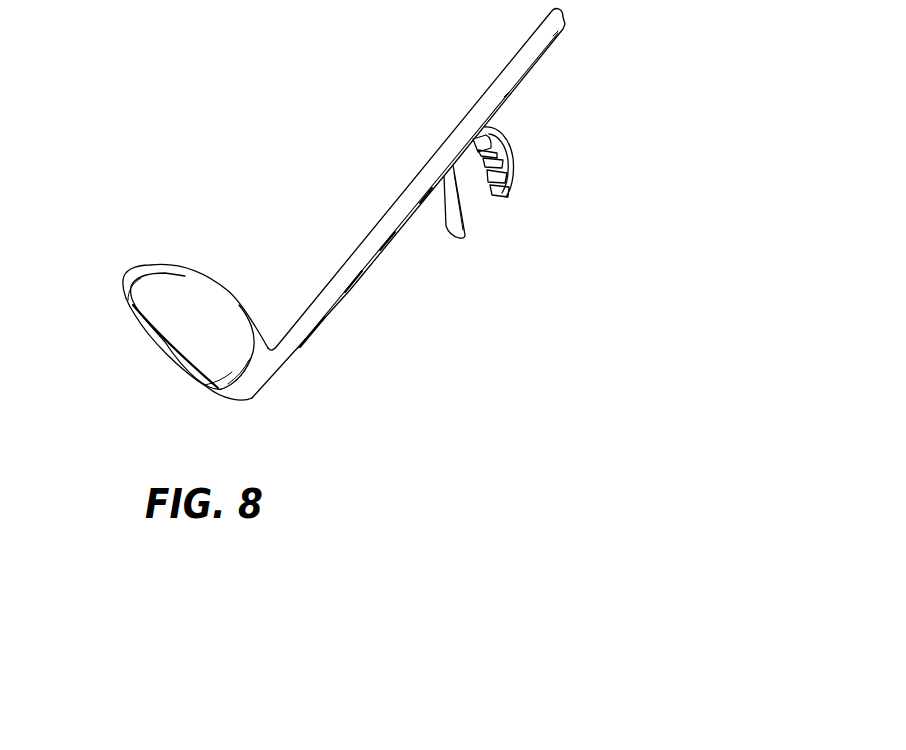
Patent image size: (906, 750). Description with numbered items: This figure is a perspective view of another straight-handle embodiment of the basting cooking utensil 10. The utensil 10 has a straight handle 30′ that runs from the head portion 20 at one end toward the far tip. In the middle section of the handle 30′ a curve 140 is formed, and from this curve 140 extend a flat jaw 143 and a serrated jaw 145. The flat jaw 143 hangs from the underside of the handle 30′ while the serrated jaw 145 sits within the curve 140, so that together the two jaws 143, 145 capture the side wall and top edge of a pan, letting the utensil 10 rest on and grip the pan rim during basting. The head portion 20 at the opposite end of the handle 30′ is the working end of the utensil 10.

The basting cooking utensil 10 is at (280, 142).
The lens frame / eye wire 20 is at (130, 273).
The handle 30′ is at (378, 233).
The curve 140 is at (553, 164).
The serrated jaw 145 is at (516, 188).
The flat jaw 143 is at (460, 244).